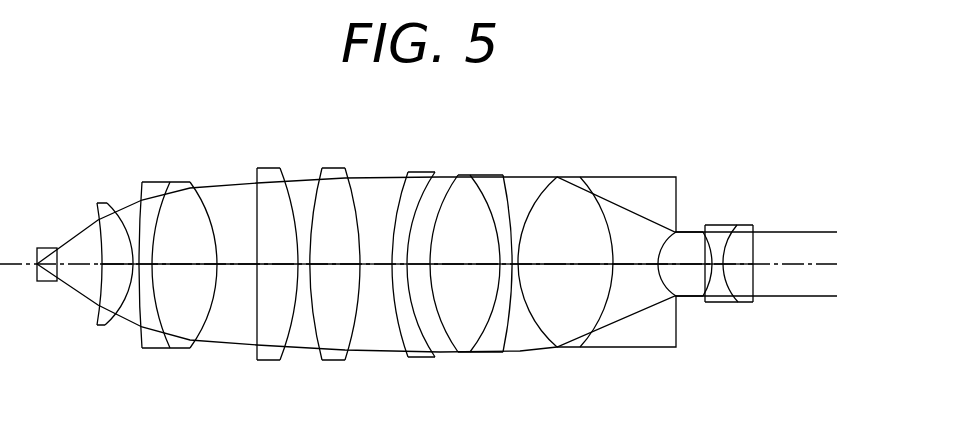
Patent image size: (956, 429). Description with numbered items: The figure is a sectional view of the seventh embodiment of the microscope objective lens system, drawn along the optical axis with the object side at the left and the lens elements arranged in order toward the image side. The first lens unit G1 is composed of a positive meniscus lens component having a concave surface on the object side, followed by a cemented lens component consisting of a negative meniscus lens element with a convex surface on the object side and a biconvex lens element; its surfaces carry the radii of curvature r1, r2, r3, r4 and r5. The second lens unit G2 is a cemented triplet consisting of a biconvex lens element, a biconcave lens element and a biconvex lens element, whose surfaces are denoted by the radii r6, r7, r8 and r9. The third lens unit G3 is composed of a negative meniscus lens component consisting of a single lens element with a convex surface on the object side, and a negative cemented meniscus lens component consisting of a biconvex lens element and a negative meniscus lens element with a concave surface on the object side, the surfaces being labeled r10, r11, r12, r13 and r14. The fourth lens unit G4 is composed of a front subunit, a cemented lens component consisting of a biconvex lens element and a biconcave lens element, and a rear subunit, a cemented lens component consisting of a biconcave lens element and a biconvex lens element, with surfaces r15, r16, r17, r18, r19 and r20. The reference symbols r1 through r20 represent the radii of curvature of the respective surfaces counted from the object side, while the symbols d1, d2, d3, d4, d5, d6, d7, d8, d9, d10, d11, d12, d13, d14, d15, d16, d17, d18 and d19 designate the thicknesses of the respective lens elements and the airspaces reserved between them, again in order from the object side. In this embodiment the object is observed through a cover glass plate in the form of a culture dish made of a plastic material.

The first lens unit G1 is at (210, 128).
The second lens unit G2 is at (337, 128).
The third lens unit G3 is at (547, 128).
The fourth lens unit G4 is at (807, 128).
The radius of curvature of first surface r1 is at (97, 203).
The radius of curvature of second surface r2 is at (107, 203).
The radius of curvature of third surface r3 is at (142, 182).
The radius of curvature of fourth surface r4 is at (170, 182).
The radius of curvature of fifth surface r5 is at (190, 182).
The radius of curvature of sixth surface r6 is at (257, 168).
The radius of curvature of seventh surface r7 is at (280, 168).
The radius of curvature of eighth surface r8 is at (322, 168).
The radius of curvature of ninth surface r9 is at (345, 168).
The radius of curvature of tenth surface r10 is at (408, 172).
The radius of curvature of eleventh surface r11 is at (435, 172).
The radius of curvature of twelfth surface r12 is at (458, 175).
The radius of curvature of thirteenth surface r13 is at (470, 175).
The radius of curvature of fourteenth surface r14 is at (503, 175).
The radius of curvature of fifteenth surface r15 is at (557, 177).
The radius of curvature of sixteenth surface r16 is at (580, 177).
The radius of curvature of seventeenth surface r17 is at (676, 232).
The radius of curvature of eighteenth surface r18 is at (703, 232).
The radius of curvature of nineteenth surface r19 is at (737, 225).
The radius of curvature of twentieth surface r20 is at (753, 225).
The first thickness or airspace d1 is at (105, 262).
The second thickness or airspace d2 is at (137, 262).
The third thickness or airspace d3 is at (152, 262).
The fourth thickness or airspace d4 is at (185, 262).
The fifth thickness or airspace d5 is at (217, 262).
The sixth thickness or airspace d6 is at (275, 262).
The seventh thickness or airspace d7 is at (300, 262).
The eighth thickness or airspace d8 is at (333, 262).
The ninth thickness or airspace d9 is at (368, 262).
The tenth thickness or airspace d10 is at (398, 262).
The eleventh thickness or airspace d11 is at (420, 262).
The twelfth thickness or airspace d12 is at (455, 262).
The thirteenth thickness or airspace d13 is at (513, 262).
The fourteenth thickness or airspace d14 is at (570, 262).
The fifteenth thickness or airspace d15 is at (627, 262).
The sixteenth thickness or airspace d16 is at (665, 262).
The seventeenth thickness or airspace d17 is at (710, 262).
The eighteenth thickness or airspace d18 is at (717, 264).
The nineteenth thickness or airspace d19 is at (753, 264).